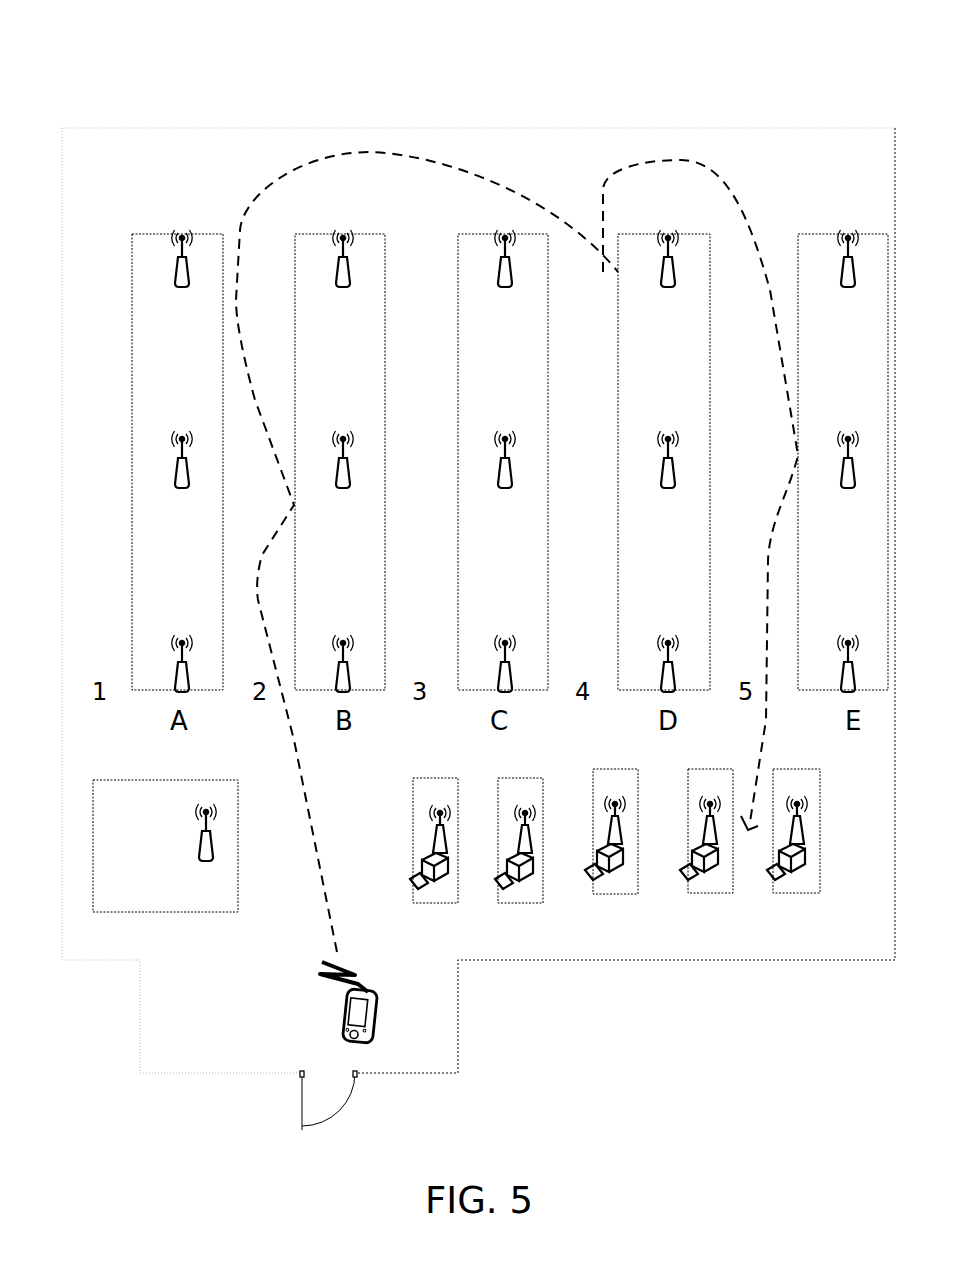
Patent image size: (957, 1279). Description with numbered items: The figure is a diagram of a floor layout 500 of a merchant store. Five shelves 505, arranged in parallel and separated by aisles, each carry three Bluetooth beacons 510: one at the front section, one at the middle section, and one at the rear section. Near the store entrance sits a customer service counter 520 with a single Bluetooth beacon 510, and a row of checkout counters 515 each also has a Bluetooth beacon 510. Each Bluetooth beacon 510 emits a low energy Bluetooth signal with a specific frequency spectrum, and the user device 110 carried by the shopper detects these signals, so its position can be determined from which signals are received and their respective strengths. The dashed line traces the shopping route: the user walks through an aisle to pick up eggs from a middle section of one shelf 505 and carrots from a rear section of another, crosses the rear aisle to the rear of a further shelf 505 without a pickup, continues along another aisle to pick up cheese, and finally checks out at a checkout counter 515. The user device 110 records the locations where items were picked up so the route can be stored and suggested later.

The store layout 500 is at (133, 41).
The shelf 505 is at (492, 427).
The Bluetooth beacon 510 is at (192, 261).
The checkout counter 515 is at (413, 806).
The customer service counter 520 is at (238, 808).
The user device 110 is at (378, 1033).